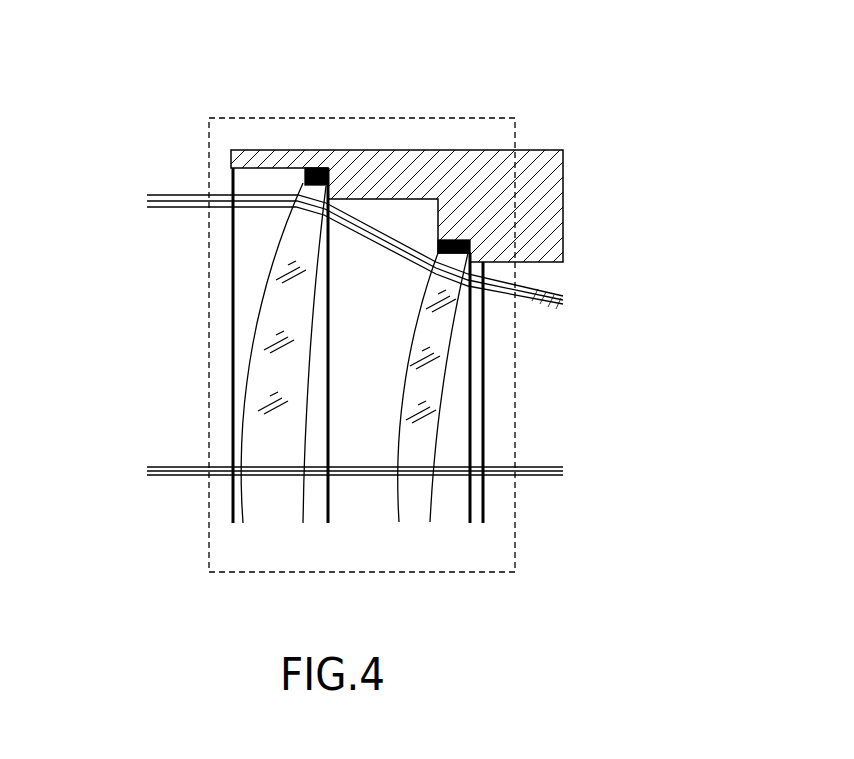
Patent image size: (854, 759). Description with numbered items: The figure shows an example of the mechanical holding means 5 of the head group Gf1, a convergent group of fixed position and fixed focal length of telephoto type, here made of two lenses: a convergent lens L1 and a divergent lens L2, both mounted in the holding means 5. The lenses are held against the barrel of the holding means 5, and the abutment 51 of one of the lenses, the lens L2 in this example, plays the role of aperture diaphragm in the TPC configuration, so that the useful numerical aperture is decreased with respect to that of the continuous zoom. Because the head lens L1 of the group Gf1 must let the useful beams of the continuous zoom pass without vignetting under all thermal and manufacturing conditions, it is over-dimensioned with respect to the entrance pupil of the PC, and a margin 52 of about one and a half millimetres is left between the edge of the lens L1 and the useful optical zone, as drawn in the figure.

The mechanical holding means 5 is at (592, 195).
The abutment 51 is at (470, 400).
The margin 52 is at (310, 190).
The head group Gf1 is at (458, 117).
The convergent lens L1 is at (268, 272).
The divergent lens L2 is at (410, 363).